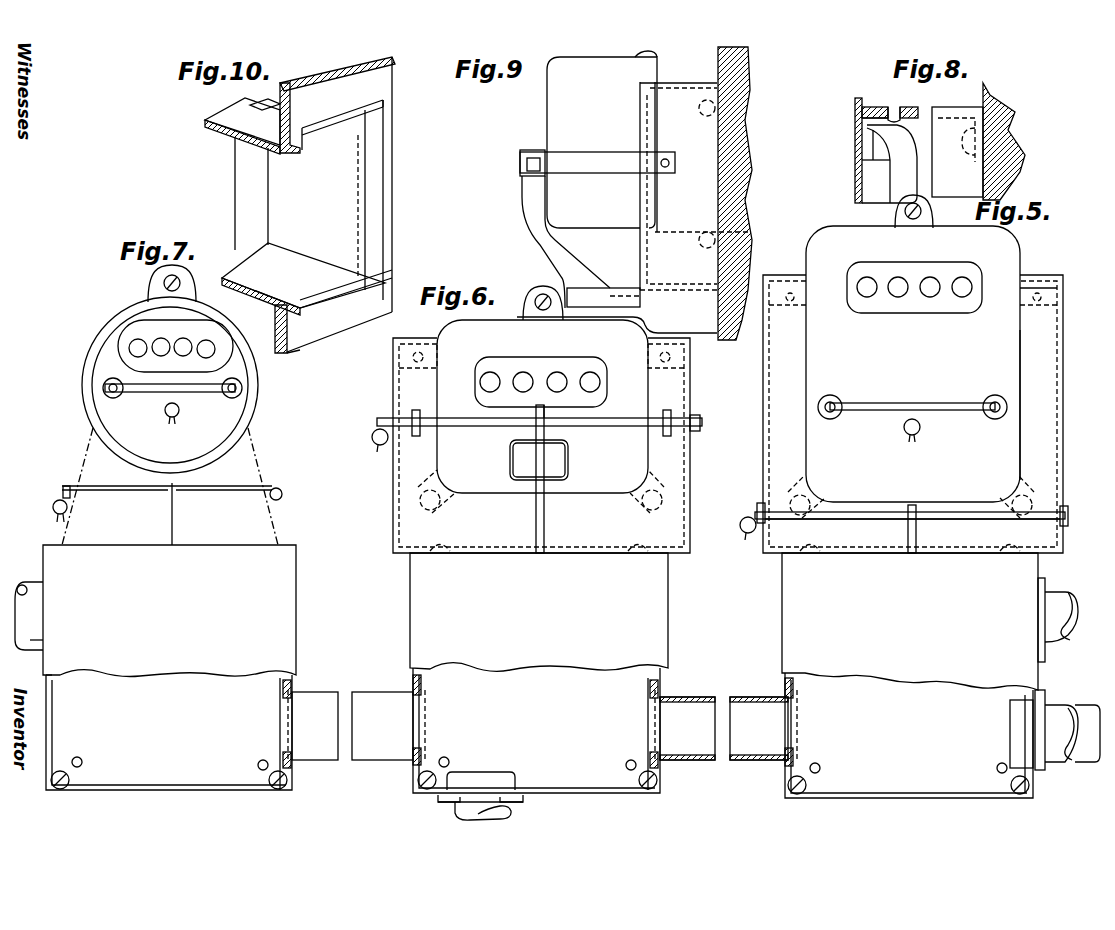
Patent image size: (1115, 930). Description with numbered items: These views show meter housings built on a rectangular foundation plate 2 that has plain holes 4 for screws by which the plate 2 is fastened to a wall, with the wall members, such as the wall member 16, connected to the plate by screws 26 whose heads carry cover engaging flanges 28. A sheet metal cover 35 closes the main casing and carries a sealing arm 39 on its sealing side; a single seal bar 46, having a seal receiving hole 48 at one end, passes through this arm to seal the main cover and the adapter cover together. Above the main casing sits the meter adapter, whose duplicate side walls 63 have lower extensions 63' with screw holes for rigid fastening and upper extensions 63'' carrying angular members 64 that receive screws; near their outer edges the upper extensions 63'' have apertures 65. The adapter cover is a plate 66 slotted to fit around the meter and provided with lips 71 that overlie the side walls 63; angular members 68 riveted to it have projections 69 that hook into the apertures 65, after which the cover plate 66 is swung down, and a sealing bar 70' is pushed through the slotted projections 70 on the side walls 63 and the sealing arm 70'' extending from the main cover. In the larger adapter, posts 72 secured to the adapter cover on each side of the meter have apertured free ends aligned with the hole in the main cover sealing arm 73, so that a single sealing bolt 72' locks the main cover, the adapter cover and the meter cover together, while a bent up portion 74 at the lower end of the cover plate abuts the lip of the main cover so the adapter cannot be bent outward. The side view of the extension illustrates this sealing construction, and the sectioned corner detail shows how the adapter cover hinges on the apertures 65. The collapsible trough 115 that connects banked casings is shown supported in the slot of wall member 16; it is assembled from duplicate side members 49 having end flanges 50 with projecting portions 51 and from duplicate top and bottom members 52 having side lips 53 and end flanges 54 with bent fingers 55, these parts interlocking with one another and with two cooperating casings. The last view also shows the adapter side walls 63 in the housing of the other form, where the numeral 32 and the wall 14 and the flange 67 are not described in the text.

In FIG. 7, the plate 2 is at (169, 732).
In FIG. 6, the plate 2 is at (536, 730).
In FIG. 5, the plate 2 is at (909, 735).
In FIG. 7, the plain holes 4 is at (82, 762).
In FIG. 6, the plain holes 4 is at (449, 762).
In FIG. 5, the plain holes 4 is at (820, 768).
In FIG. 7, the side wall / clip 14 is at (52, 732).
In FIG. 5, the side wall / clip 14 is at (1042, 704).
In FIG. 10, the wall member 16 is at (336, 336).
In FIG. 7, the wall member 16 is at (293, 690).
In FIG. 6, the wall member 16 is at (422, 678).
In FIG. 5, the wall member 16 is at (786, 684).
In FIG. 7, the screws 26 is at (69, 780).
In FIG. 6, the screws 26 is at (425, 790).
In FIG. 5, the screws 26 is at (798, 795).
In FIG. 6, the cover engaging flanges 28 is at (646, 790).
In FIG. 7, the clamp knob 32 is at (70, 486).
In FIG. 7, the cover 35 is at (155, 611).
In FIG. 6, the cover 35 is at (539, 612).
In FIG. 5, the cover 35 is at (910, 621).
In FIG. 7, the sealing arm 39 is at (175, 513).
In FIG. 7, the seal bar 46 is at (112, 483).
In FIG. 7, the seal receiving hole 48 is at (167, 473).
In FIG. 10, the side members 49 is at (243, 193).
In FIG. 10, the flanges 50 is at (355, 116).
In FIG. 10, the projecting portion 51 is at (375, 103).
In FIG. 10, the top and bottom members 52 is at (355, 192).
In FIG. 10, the lips 53 is at (255, 105).
In FIG. 10, the end flanges 54 is at (384, 220).
In FIG. 10, the bent fingers 55 is at (384, 113).
In FIG. 5, the side walls 63 is at (917, 414).
In FIG. 5, the lower extensions 63' is at (912, 611).
In FIG. 5, the upper extensions 63'' is at (914, 394).
In FIG. 8, the angular members 64 is at (978, 127).
In FIG. 5, the angular members 64 is at (775, 298).
In FIG. 8, the apertures 65 is at (890, 107).
In FIG. 5, the cover plate 66 is at (1035, 432).
In FIG. 8, the side strip 67 is at (858, 131).
In FIG. 8, the angular members 68 is at (866, 130).
In FIG. 8, the projections 69 is at (896, 114).
In FIG. 5, the slotted projection 70 is at (917, 504).
In FIG. 5, the sealing bar 70' is at (912, 530).
In FIG. 5, the sealing arm 70'' is at (928, 544).
In FIG. 8, the lips 71 is at (865, 178).
In FIG. 5, the lips 71 is at (1062, 290).
In FIG. 9, the posts 72 is at (597, 151).
In FIG. 6, the posts 72 is at (536, 415).
In FIG. 6, the sealing bolt 72' is at (578, 434).
In FIG. 9, the main cover sealing arm 73 is at (522, 213).
In FIG. 6, the main cover sealing arm 73 is at (545, 520).
In FIG. 9, the bent up portion 74 is at (612, 288).
In FIG. 10, the collapsible trough 115 is at (278, 265).
In FIG. 6, the collapsible trough 115 is at (382, 726).
In FIG. 5, the collapsible trough 115 is at (758, 744).